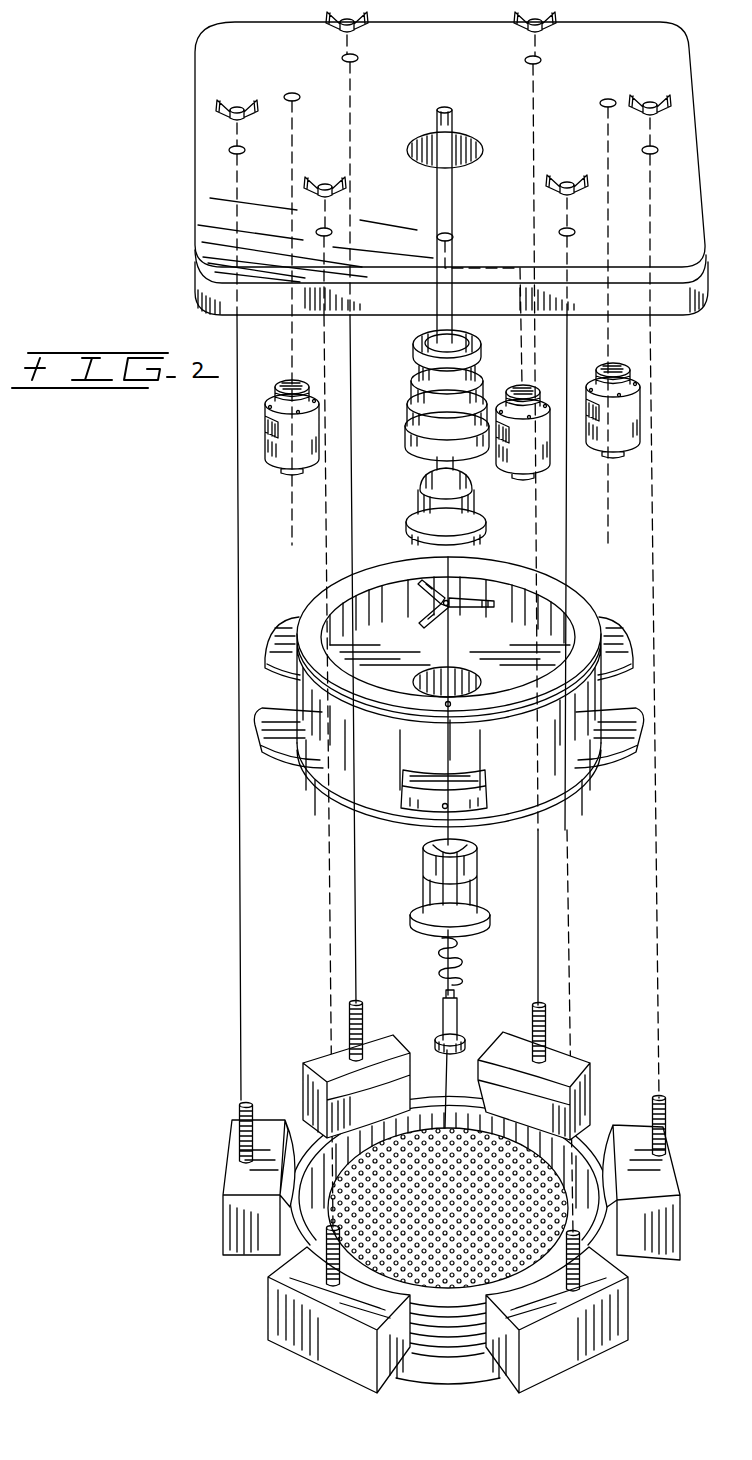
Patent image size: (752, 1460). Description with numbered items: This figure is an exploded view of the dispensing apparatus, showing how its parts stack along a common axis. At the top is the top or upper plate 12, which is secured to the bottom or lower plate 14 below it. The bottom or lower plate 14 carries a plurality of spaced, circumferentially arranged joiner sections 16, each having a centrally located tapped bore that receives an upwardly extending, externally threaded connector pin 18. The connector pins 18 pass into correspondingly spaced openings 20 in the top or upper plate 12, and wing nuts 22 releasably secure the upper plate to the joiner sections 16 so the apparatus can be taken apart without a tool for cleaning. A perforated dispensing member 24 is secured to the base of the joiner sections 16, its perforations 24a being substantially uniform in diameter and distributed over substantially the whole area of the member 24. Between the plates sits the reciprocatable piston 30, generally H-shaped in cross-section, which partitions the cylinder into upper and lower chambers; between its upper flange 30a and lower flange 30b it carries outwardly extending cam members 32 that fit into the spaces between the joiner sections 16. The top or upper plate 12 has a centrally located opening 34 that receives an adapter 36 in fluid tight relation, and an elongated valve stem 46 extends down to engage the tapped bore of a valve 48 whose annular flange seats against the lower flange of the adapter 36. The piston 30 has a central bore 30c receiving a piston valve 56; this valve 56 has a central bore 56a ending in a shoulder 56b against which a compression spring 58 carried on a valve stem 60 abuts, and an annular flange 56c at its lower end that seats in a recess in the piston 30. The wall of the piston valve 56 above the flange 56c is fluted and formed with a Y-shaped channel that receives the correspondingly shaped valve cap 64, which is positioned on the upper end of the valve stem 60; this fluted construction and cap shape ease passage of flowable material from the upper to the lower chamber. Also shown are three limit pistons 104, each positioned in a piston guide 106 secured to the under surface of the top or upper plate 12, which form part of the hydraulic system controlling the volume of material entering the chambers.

The top or upper plate 12 is at (702, 205).
The bottom or lower plate 14 is at (466, 1216).
The joiner sections 16 is at (320, 1060).
The connector pin 18 is at (363, 1030).
The openings 20 is at (358, 62).
The wing nuts 22 is at (342, 26).
The perforated dispensing member 24 is at (470, 1273).
The perforations 24a is at (450, 1290).
The piston 30 is at (469, 692).
The upper flange 30a is at (577, 590).
The lower flange 30b is at (573, 777).
The central bore 30c is at (463, 672).
The cam members 32 is at (267, 653).
The centrally located opening 34 is at (464, 138).
The adapter 36 is at (420, 454).
The valve stem 46 is at (441, 108).
The valve 48 is at (482, 528).
The piston valve 56 is at (485, 903).
The central bore 56a is at (423, 847).
The shoulder 56b is at (428, 897).
The annular flange 56c is at (483, 919).
The compression spring 58 is at (440, 962).
The valve stem 60 is at (455, 1005).
The valve cap 64 is at (482, 600).
The limit piston 104 is at (276, 392).
The piston guide 106 is at (280, 452).